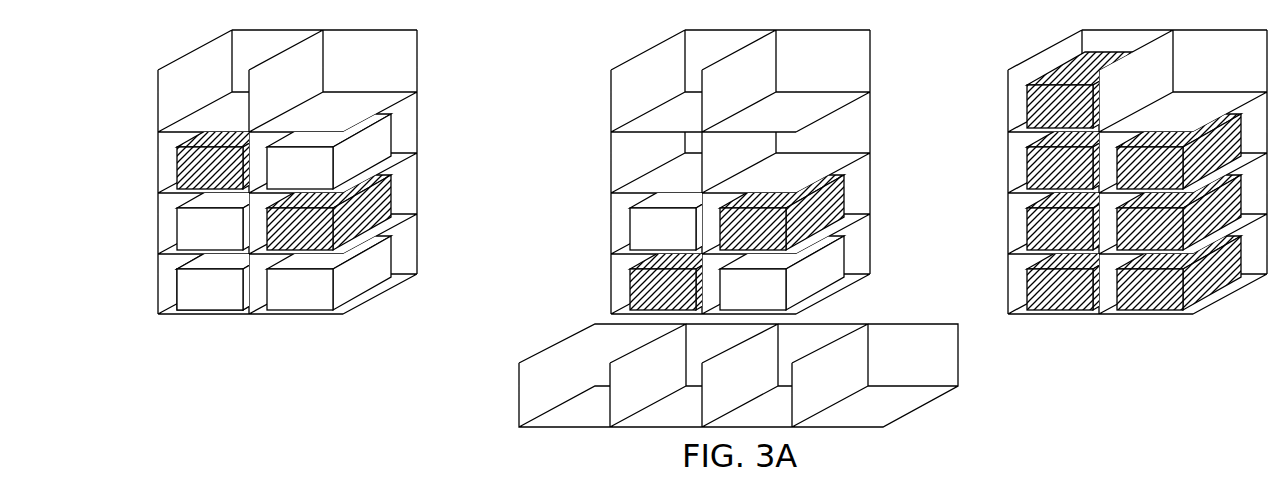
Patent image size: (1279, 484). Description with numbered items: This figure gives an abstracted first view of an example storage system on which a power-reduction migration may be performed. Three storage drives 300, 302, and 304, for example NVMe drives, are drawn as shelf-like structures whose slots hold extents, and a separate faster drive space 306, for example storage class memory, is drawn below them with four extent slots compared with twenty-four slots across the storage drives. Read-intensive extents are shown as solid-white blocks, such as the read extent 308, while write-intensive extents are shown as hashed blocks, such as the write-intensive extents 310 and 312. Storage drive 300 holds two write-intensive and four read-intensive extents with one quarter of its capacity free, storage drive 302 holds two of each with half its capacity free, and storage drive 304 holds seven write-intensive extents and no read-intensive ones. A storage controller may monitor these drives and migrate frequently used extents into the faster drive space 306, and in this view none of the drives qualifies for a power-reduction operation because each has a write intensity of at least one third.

The storage drive 300 is at (283, 172).
The storage drive 302 is at (554, 114).
The storage drive 304 is at (970, 114).
The faster drive space 306 is at (992, 356).
The read extent 308 is at (189, 273).
The write-intensive extent 310 is at (186, 151).
The write-intensive extent 312 is at (381, 222).